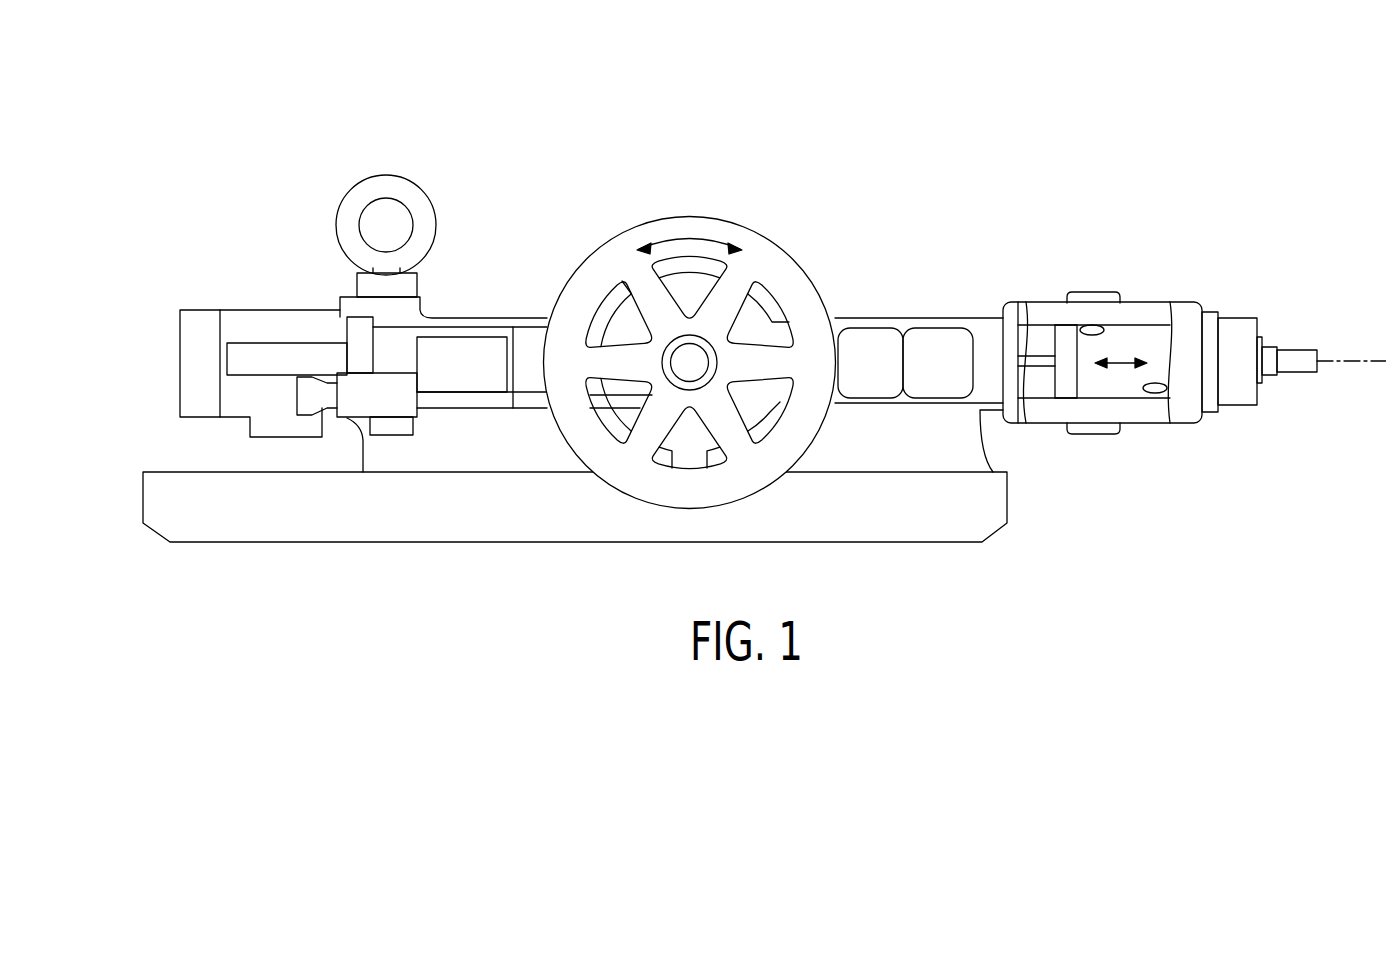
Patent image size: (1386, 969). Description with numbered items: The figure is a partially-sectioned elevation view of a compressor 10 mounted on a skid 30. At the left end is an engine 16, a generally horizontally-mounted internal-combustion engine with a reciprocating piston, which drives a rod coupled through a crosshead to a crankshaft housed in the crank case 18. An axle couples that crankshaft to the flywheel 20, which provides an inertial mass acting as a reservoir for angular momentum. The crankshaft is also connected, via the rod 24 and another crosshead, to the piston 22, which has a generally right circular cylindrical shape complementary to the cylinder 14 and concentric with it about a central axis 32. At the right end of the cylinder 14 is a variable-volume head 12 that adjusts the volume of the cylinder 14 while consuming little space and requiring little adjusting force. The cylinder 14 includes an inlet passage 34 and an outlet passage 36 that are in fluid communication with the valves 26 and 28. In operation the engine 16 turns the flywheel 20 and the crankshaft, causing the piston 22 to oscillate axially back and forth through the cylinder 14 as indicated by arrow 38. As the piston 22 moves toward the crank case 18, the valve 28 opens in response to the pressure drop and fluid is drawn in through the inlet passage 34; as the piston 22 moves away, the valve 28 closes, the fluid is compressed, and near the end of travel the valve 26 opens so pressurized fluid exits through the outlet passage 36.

The compressor 10 is at (1139, 84).
The variable-volume head 12 is at (1242, 315).
The cylinder 14 is at (1140, 322).
The engine 16 is at (245, 310).
The crank case 18 is at (608, 317).
The flywheel 20 is at (757, 229).
The piston 22 is at (1050, 340).
The rod 24 is at (1045, 372).
The valve 26 is at (1118, 428).
The valve 28 is at (1097, 292).
The skid 30 is at (1007, 497).
The central axis 32 is at (1346, 364).
The inlet passage 34 is at (1083, 326).
The outlet passage 36 is at (1157, 382).
The arrow 38 is at (1120, 359).